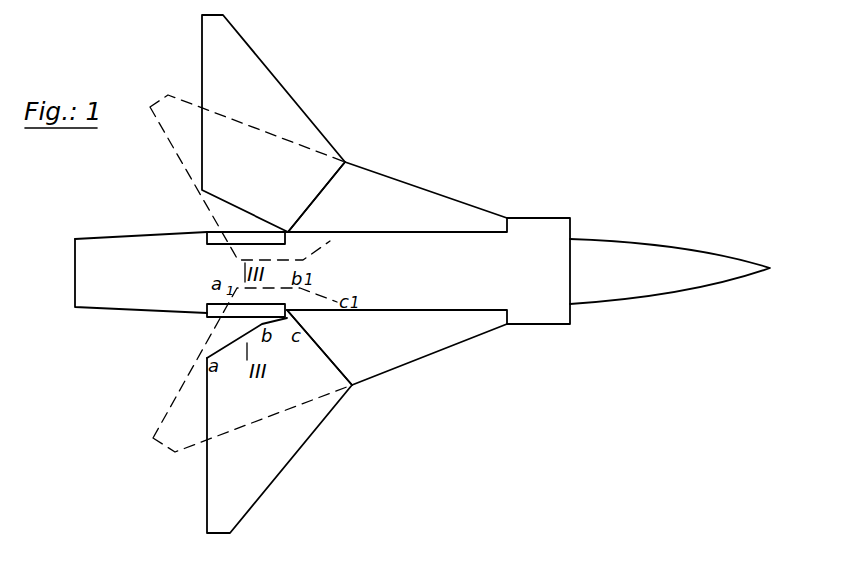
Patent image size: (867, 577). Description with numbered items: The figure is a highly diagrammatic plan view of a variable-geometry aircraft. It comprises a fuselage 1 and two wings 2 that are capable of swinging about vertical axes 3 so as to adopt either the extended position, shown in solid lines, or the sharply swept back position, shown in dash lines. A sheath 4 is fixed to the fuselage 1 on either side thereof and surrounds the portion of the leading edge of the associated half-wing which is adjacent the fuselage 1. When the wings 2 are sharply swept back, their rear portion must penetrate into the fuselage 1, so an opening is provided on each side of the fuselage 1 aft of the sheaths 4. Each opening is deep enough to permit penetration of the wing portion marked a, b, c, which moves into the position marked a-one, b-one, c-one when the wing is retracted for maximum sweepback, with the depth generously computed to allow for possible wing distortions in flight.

The fuselage 1 is at (530, 227).
The wings 2 is at (287, 99).
The vertical axes 3 is at (337, 178).
The sheath 4 is at (354, 177).